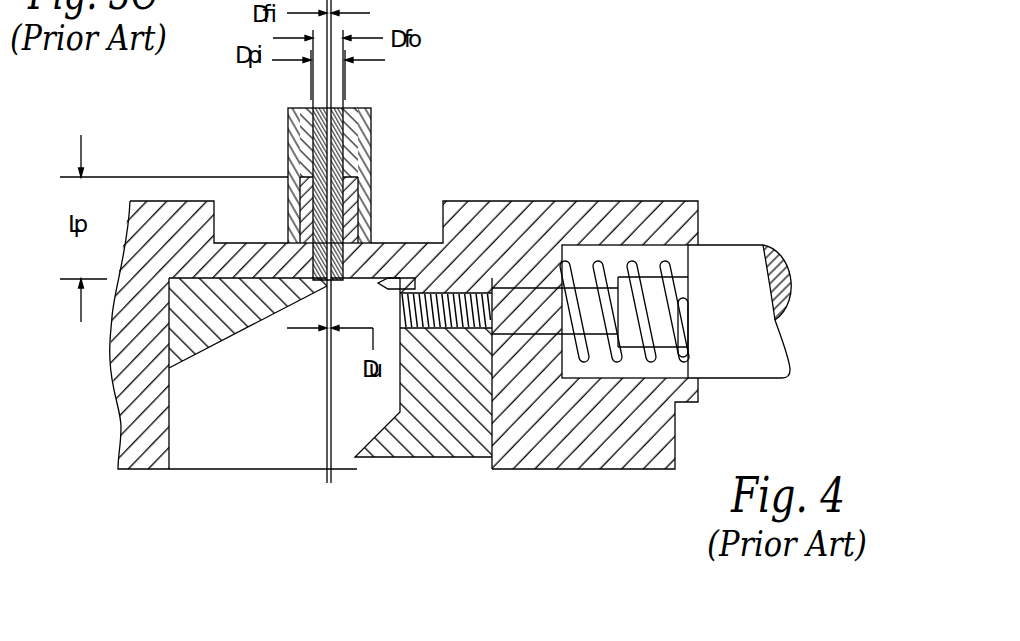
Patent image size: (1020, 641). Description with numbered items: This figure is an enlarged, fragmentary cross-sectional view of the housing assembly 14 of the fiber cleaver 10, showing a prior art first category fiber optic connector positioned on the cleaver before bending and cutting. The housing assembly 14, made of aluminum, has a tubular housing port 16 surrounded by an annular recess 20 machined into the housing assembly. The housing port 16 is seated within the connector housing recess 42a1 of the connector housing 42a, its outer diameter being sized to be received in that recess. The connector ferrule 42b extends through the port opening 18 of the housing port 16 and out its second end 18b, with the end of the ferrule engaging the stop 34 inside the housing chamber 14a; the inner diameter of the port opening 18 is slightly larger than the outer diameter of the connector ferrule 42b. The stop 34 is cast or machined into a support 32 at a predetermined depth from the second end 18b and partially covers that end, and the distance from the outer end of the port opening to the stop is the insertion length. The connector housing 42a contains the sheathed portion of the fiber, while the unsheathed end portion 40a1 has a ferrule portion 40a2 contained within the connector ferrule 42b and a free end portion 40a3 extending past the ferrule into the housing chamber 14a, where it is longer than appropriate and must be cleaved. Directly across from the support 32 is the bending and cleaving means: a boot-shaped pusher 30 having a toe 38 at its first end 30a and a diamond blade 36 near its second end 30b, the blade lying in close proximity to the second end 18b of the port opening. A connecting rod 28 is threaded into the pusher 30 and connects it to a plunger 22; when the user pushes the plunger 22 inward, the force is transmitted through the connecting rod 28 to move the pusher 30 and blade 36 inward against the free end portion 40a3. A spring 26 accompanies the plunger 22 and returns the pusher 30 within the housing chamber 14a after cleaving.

The fiber cleaver 10 is at (592, 143).
The housing assembly 14 is at (657, 212).
The housing chamber 14a is at (232, 451).
The housing port 16 is at (371, 200).
The port opening 18 is at (371, 196).
The second end of port opening 18b is at (372, 237).
The annular recess 20 is at (228, 222).
The plunger 22 is at (757, 357).
The spring 26 is at (650, 357).
The connecting rod 28 is at (438, 292).
The pusher 30 is at (457, 440).
The first end of pusher 30a is at (408, 460).
The second end of pusher 30b is at (469, 277).
The support 32 is at (213, 328).
The stop 34 is at (300, 277).
The blade 36 is at (394, 291).
The toe 38 is at (363, 457).
The unsheathed end portion 40a1 is at (328, 407).
The ferrule portion 40a2 is at (312, 112).
The free end portion 40a3 is at (327, 343).
The connector housing 42a is at (355, 116).
The connector housing recess 42a1 is at (304, 198).
The connector ferrule 42b is at (304, 143).